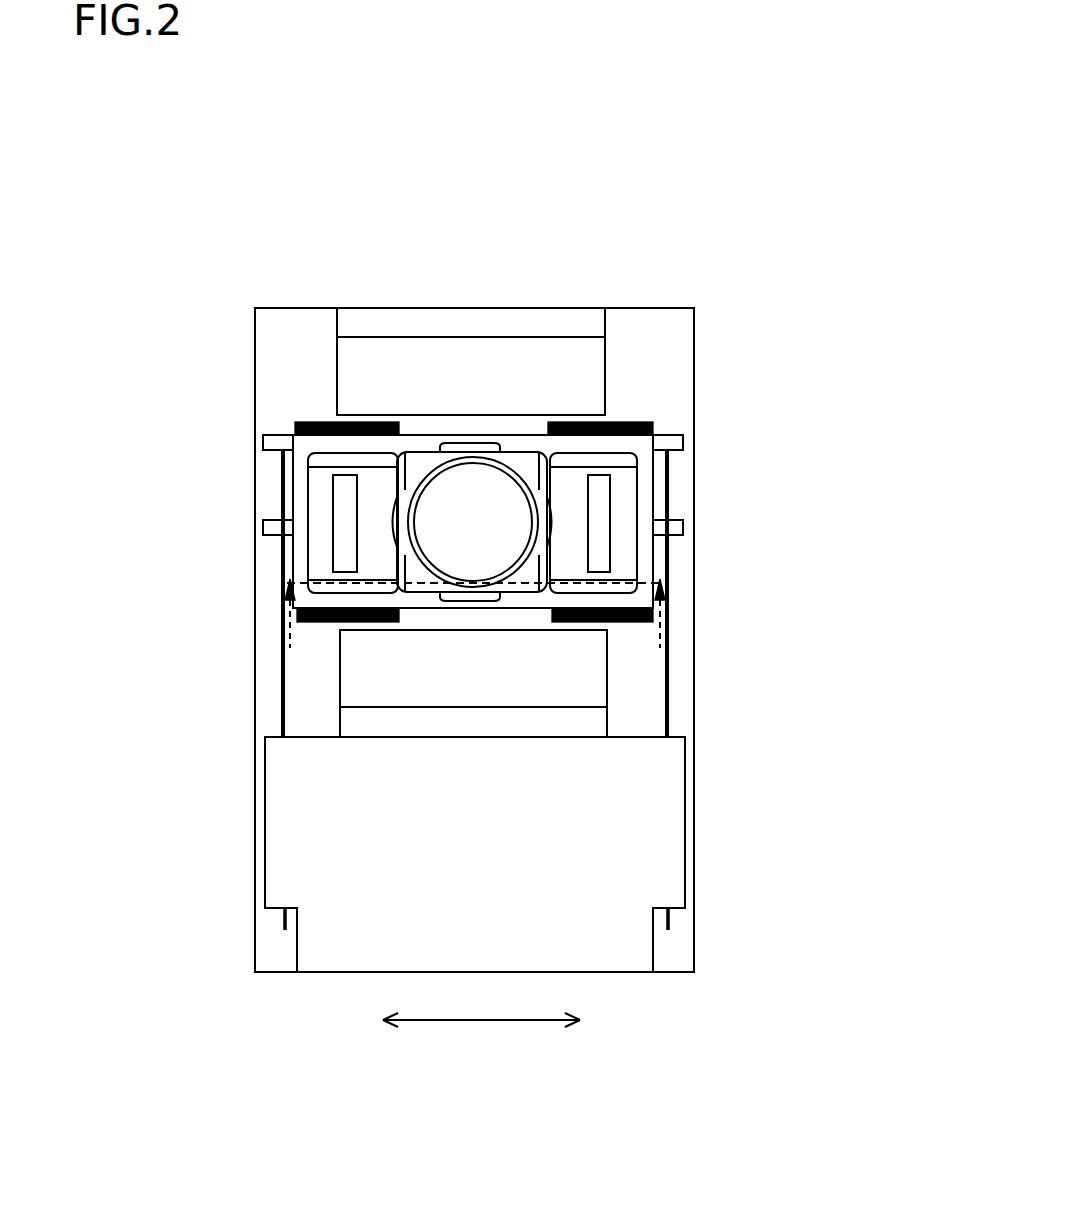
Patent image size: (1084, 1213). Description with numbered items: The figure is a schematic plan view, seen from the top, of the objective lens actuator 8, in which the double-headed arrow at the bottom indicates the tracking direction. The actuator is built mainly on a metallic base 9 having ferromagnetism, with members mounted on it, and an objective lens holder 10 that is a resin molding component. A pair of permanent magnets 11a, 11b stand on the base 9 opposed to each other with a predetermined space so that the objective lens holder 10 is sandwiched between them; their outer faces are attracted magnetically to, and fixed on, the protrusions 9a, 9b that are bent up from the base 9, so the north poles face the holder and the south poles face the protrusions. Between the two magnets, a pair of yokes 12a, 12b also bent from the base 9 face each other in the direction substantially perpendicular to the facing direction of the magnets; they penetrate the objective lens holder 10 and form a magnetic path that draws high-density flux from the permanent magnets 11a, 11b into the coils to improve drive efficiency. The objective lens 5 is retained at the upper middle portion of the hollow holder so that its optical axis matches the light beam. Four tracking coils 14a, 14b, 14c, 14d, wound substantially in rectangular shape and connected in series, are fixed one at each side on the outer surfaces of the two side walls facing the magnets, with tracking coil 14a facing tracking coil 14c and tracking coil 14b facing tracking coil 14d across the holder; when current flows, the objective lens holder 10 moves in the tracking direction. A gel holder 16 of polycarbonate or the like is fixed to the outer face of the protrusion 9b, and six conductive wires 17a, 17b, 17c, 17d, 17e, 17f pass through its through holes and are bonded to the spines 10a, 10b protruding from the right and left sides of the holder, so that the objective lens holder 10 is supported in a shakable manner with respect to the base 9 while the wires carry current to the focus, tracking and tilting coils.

The objective lens actuator 8 is at (698, 255).
The base 9 is at (680, 332).
The protrusion 9a is at (452, 318).
The protrusion 9b is at (590, 720).
The objective lens holder 10 is at (479, 450).
The spine 10a is at (683, 527).
The spine 10b is at (283, 530).
The permanent magnet 11a is at (590, 372).
The permanent magnet 11b is at (590, 680).
The yoke 12a is at (600, 548).
The yoke 12b is at (350, 508).
The tracking coil 14a is at (615, 425).
The tracking coil 14b is at (300, 425).
The tracking coil 14c is at (617, 622).
The tracking coil 14d is at (320, 618).
The objective lens 5 is at (480, 492).
The gel holder 16 is at (650, 823).
The conductive wire 17a is at (805, 593).
The conductive wire 17b is at (805, 593).
The conductive wire 17c is at (662, 613).
The conductive wire 17d is at (175, 599).
The conductive wire 17e is at (175, 599).
The conductive wire 17f is at (282, 682).